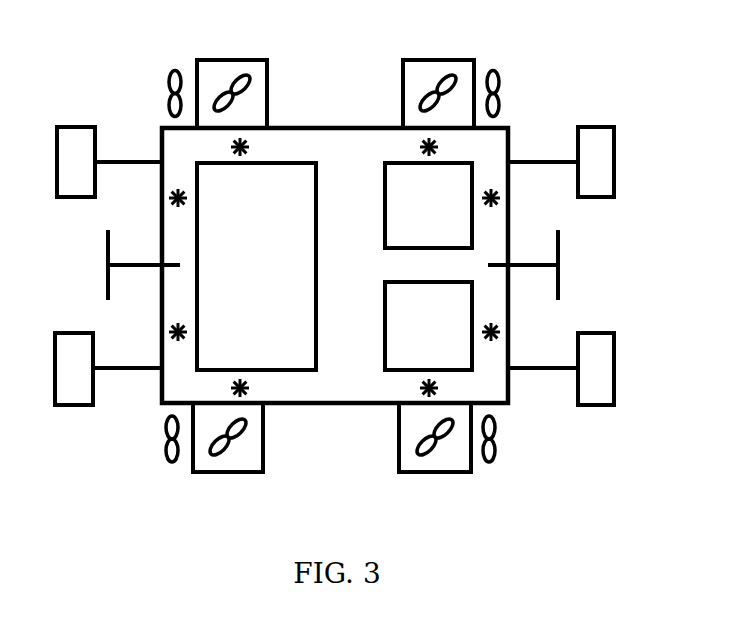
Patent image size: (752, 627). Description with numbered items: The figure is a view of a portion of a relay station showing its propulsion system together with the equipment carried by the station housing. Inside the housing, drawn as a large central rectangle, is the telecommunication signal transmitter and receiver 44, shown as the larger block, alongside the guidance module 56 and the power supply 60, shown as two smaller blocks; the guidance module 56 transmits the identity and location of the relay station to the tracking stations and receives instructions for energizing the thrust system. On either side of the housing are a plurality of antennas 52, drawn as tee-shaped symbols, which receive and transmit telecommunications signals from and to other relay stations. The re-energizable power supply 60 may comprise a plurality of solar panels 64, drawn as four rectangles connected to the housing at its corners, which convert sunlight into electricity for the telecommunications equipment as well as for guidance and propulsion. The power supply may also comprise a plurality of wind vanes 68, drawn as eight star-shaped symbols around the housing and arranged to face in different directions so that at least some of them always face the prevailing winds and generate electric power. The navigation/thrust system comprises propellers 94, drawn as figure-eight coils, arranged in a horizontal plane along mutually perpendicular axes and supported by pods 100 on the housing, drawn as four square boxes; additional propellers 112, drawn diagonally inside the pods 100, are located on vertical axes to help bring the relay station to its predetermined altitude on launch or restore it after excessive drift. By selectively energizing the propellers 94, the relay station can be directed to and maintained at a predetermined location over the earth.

The telecommunication signal transmitter and receiver 44 is at (250, 276).
The antennas 52 is at (108, 250).
The guidance module 56 is at (422, 343).
The power supply 60 is at (422, 227).
The solar panels 64 is at (75, 148).
The wind vanes 68 is at (409, 145).
The propellers 94 is at (173, 72).
The pods 100 is at (232, 60).
The propellers 112 is at (250, 78).